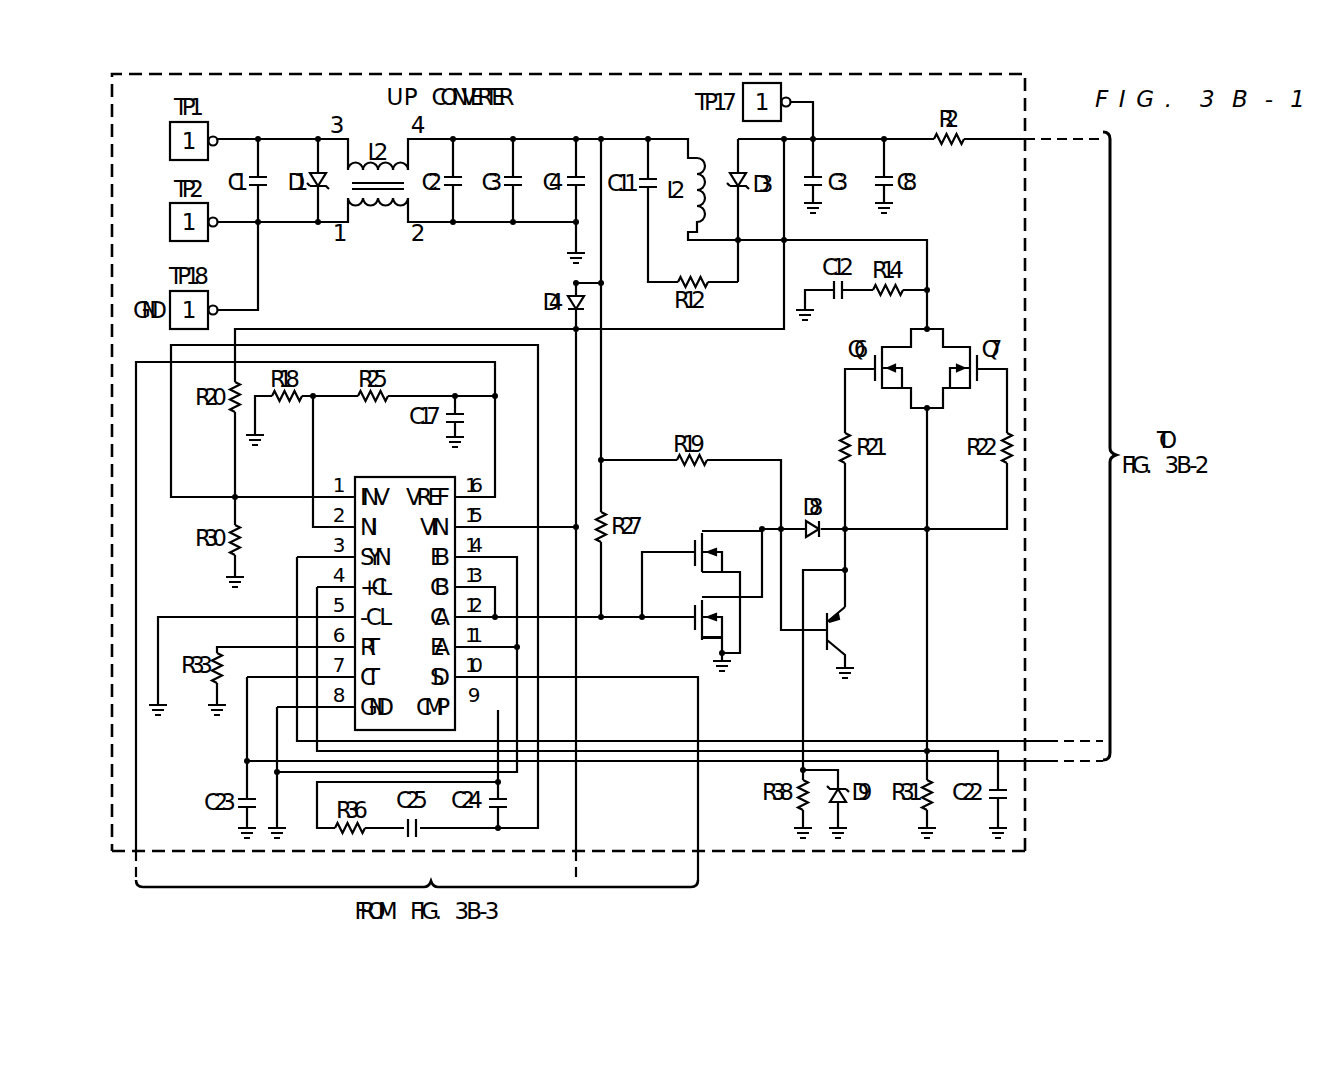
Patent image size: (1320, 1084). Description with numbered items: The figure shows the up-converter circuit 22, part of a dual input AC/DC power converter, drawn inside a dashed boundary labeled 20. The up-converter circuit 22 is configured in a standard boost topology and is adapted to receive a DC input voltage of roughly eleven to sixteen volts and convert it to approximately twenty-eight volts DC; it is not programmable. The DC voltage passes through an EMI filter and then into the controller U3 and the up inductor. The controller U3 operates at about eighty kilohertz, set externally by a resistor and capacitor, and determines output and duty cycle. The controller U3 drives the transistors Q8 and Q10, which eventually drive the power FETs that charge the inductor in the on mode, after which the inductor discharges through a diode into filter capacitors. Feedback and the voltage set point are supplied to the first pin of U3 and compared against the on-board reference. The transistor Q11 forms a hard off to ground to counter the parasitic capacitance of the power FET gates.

The power supply circuit 20 is at (1088, 836).
The up-converter circuit 22 is at (890, 852).
The controller U3 is at (405, 588).
The driver transistor Q8 is at (702, 586).
The driver transistor Q10 is at (691, 620).
The transistor Q11 is at (851, 635).